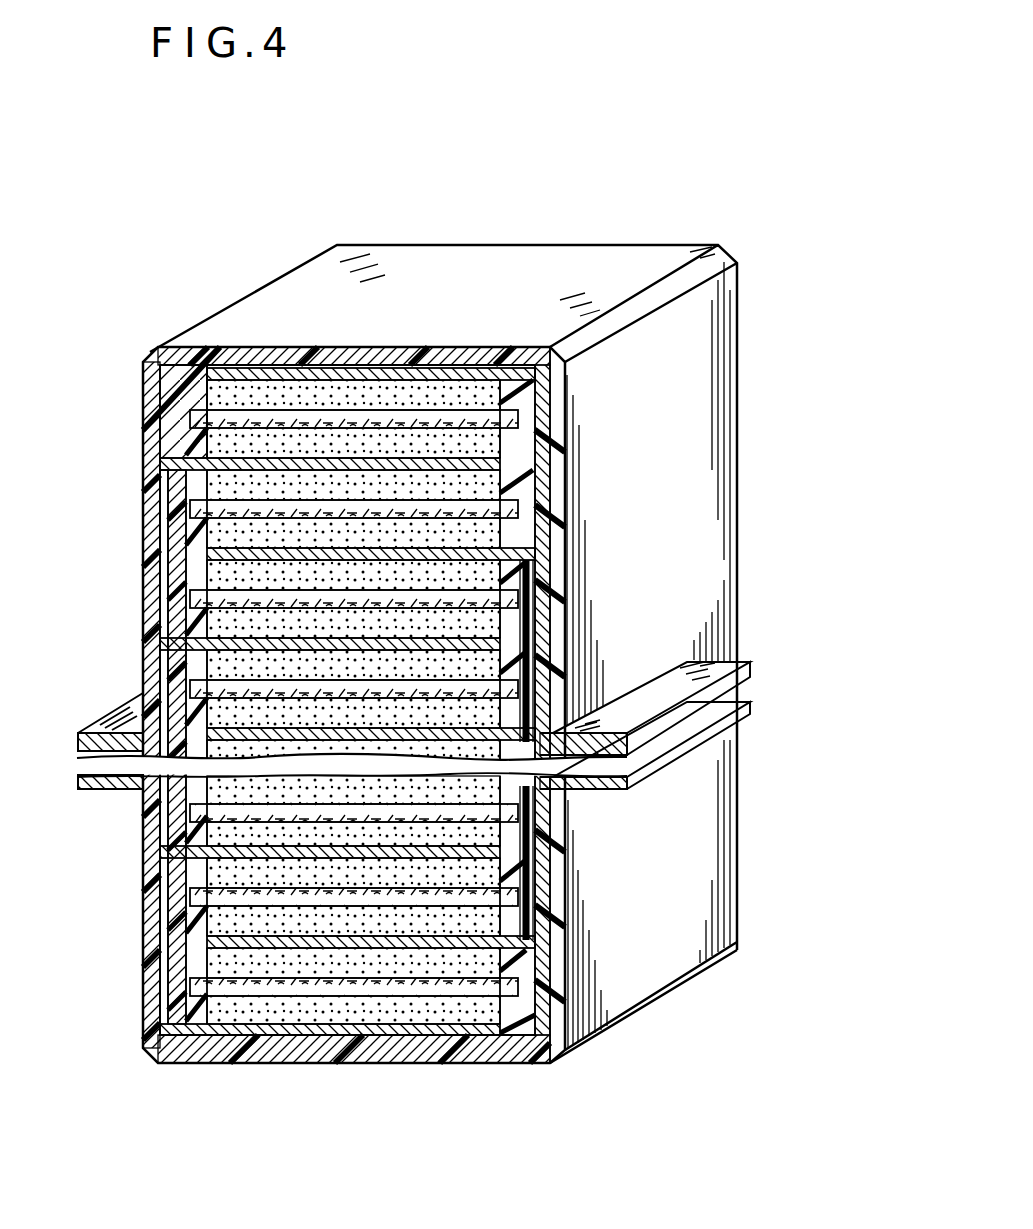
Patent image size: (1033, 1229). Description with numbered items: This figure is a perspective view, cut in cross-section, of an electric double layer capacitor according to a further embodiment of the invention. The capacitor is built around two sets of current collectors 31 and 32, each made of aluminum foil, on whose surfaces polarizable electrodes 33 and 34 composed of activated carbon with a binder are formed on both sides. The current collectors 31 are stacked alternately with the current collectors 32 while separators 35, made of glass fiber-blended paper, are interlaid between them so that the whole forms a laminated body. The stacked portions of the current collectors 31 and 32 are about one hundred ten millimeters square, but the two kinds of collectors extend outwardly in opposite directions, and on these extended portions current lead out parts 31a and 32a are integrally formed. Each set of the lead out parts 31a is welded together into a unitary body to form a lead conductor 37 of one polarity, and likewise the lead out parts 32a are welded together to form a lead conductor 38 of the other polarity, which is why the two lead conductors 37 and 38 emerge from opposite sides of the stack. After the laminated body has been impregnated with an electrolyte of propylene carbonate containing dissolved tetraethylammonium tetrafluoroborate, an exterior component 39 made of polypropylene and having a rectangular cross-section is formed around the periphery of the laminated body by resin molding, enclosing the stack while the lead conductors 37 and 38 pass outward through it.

The current collector 31 is at (360, 373).
The current lead out part 31a is at (535, 607).
The current collector 32 is at (183, 432).
The current lead out part 32a is at (170, 700).
The polarizable electrode 33 is at (283, 393).
The polarizable electrode 34 is at (223, 533).
The separator 35 is at (240, 420).
The lead conductor 37 is at (752, 668).
The lead conductor 38 is at (113, 790).
The exterior component 39 is at (522, 1035).